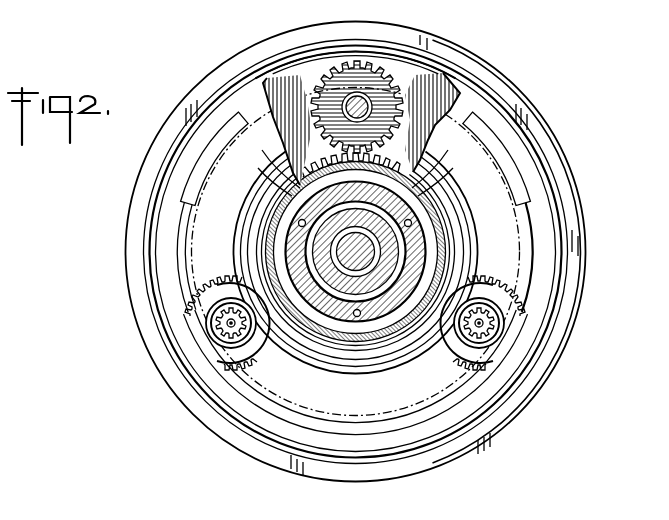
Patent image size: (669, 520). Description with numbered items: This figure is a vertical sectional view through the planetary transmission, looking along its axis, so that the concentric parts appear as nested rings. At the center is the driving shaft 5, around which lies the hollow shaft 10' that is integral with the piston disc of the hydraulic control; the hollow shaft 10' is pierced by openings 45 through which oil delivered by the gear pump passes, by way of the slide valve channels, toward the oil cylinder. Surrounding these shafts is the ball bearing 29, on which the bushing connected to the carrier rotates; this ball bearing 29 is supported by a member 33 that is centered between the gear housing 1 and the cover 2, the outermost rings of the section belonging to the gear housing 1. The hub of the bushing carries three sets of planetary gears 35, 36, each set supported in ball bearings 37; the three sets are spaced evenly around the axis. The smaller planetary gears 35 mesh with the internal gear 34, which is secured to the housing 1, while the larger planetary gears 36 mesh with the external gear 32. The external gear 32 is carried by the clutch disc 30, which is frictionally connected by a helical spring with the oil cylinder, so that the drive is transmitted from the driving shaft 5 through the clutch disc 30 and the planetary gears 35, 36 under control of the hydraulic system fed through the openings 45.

The gear housing 1 is at (264, 42).
The cover 2 is at (356, 245).
The driving shaft 5 is at (357, 335).
The hollow shaft 10' is at (356, 275).
The ball bearing 29 is at (410, 347).
The clutch disc 30 is at (440, 88).
The external gear 32 is at (413, 182).
The member 33 is at (282, 196).
The internal gear 34 is at (530, 202).
The smaller planetary gears 35 is at (223, 325).
The larger planetary gears 36 is at (383, 78).
The ball bearings 37 is at (236, 362).
The openings 45 is at (299, 224).